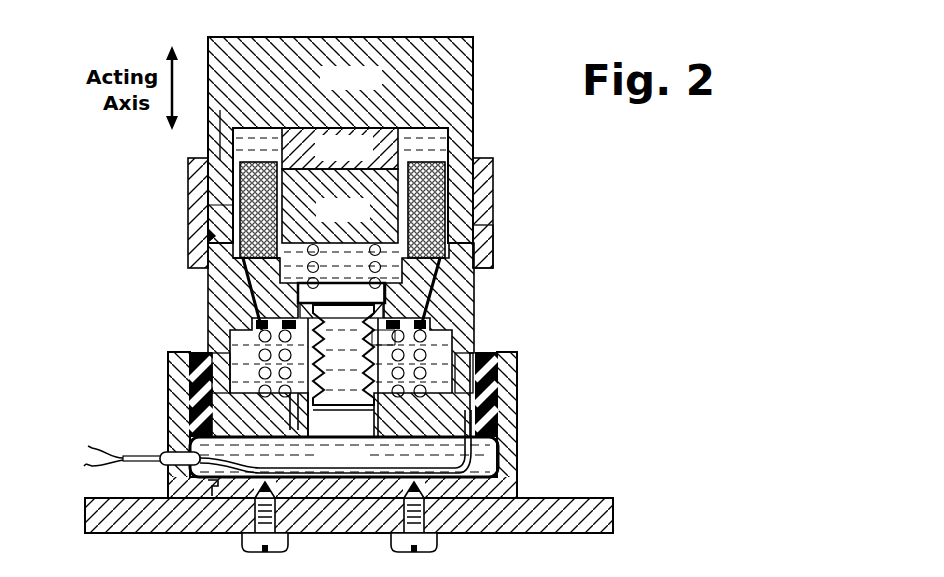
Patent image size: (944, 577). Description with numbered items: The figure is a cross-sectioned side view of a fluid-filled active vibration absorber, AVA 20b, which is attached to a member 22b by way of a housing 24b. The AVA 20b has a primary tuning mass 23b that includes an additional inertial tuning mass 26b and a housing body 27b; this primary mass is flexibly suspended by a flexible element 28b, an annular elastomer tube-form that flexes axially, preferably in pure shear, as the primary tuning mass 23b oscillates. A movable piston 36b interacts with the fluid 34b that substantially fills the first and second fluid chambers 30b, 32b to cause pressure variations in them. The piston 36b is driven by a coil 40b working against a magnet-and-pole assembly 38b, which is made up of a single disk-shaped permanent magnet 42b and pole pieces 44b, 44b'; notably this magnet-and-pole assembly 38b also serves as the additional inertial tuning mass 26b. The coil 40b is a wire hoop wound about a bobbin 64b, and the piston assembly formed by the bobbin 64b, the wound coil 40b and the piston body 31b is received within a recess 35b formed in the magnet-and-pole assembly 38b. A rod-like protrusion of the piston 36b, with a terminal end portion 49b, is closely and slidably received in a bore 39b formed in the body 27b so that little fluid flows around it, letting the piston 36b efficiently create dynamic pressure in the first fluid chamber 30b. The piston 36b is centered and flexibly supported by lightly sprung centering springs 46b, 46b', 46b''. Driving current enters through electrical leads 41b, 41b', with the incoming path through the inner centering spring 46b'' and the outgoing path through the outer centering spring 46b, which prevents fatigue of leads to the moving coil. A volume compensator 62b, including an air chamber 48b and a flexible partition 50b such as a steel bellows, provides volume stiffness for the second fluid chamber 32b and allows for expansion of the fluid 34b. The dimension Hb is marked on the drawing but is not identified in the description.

The AVA 20b is at (350, 213).
The member 22b is at (508, 536).
The primary tuning mass 23b is at (186, 178).
The housing 24b is at (506, 474).
The additional inertial tuning mass 26b is at (476, 62).
The housing body 27b is at (496, 232).
The flexible element 28b is at (190, 364).
The first fluid chamber 30b is at (344, 457).
The piston body 31b is at (240, 262).
The second fluid chamber 32b is at (480, 292).
The fluid 34b is at (200, 430).
The recess 35b is at (224, 146).
The piston 36b is at (206, 298).
The magnet-and-pole assembly 38b is at (206, 234).
The bore 39b is at (206, 484).
The coil 40b is at (498, 192).
The electrical lead 41b is at (255, 433).
The electrical lead 41b' is at (54, 482).
The permanent magnet 42b is at (340, 148).
The pole piece 44b is at (340, 206).
The pole piece 44b' is at (351, 78).
The outer centering spring 46b is at (284, 358).
The centering spring 46b' is at (444, 267).
The inner centering spring 46b'' is at (275, 294).
The air chamber 48b is at (343, 371).
The terminal end portion 49b is at (492, 428).
The flexible partition 50b is at (440, 350).
The volume compensator 62b is at (380, 342).
The bobbin 64b is at (452, 150).
The gap height Hb is at (210, 206).